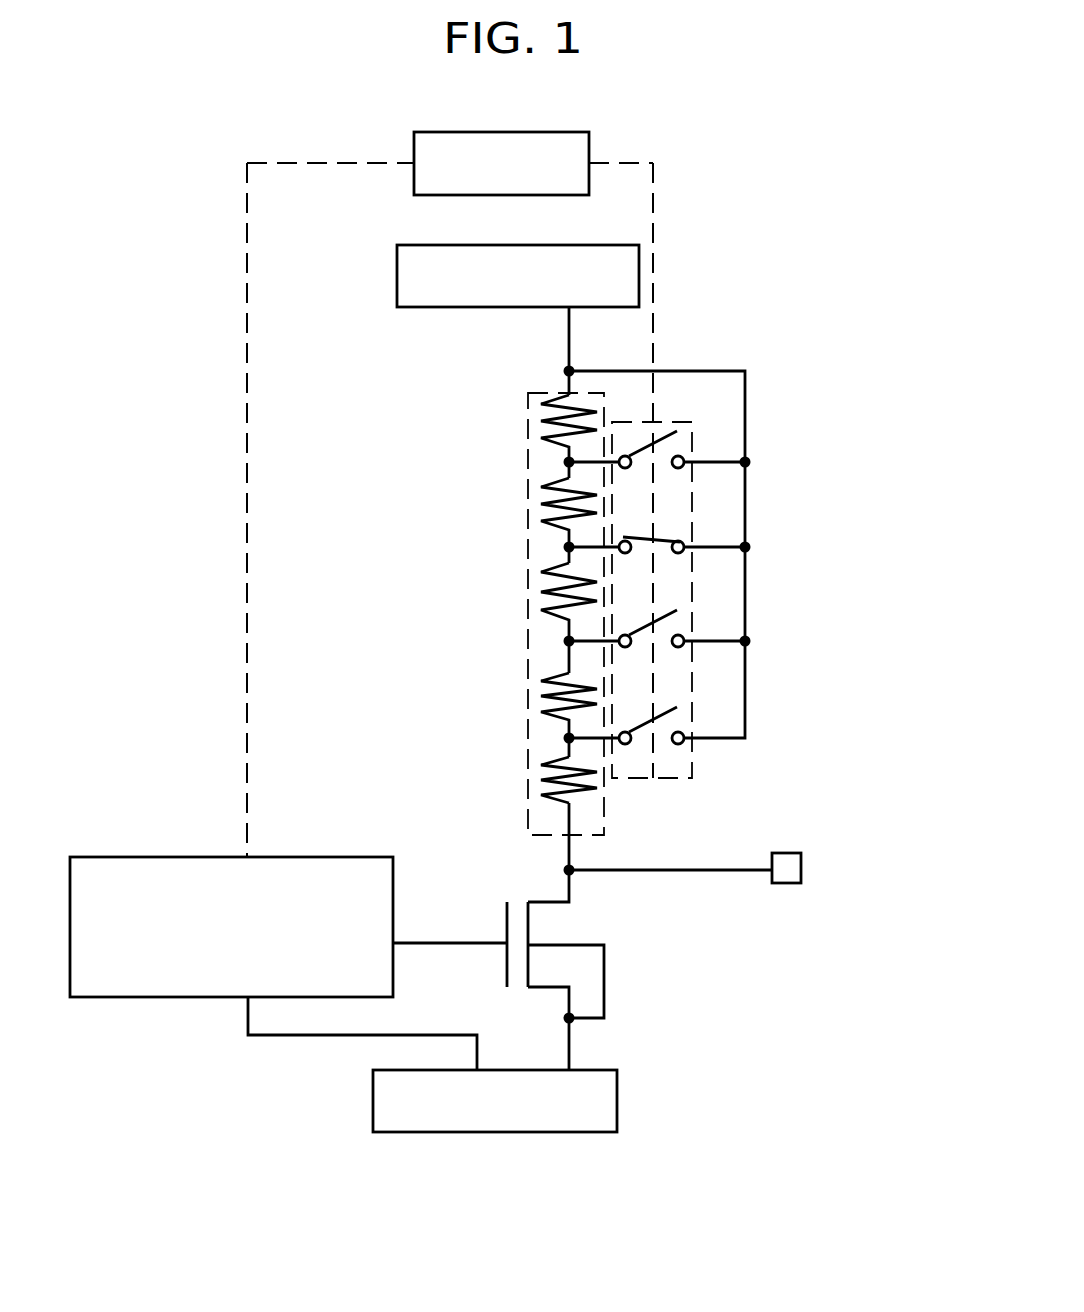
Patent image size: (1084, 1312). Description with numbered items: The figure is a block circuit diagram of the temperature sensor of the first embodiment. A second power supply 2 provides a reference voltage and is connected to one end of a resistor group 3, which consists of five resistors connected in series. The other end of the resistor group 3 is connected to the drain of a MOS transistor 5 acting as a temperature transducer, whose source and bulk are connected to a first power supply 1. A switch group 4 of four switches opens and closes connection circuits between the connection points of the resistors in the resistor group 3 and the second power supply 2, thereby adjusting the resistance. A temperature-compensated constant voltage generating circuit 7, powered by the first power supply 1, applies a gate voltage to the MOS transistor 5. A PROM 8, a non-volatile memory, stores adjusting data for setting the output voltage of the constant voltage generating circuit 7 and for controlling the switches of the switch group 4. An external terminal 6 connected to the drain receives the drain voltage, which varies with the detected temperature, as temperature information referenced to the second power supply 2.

The first power supply 1 is at (617, 1073).
The second power supply 2 is at (395, 290).
The resistor group 3 is at (528, 430).
The switch group 4 is at (693, 758).
The MOS transistor 5 is at (622, 961).
The external terminal 6 is at (801, 865).
The temperature-compensated constant voltage generating circuit 7 is at (303, 857).
The PROM 8 is at (590, 143).